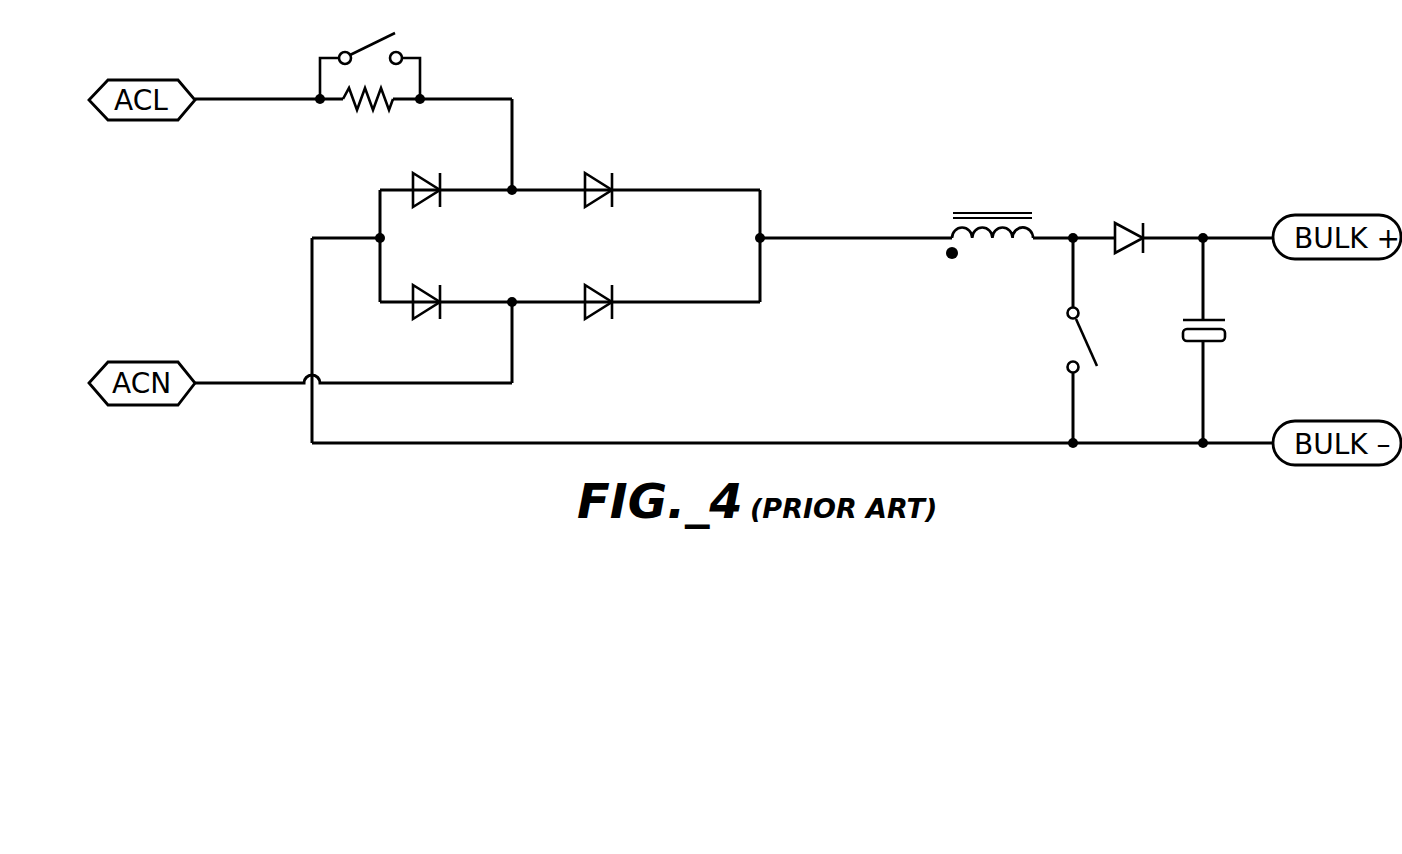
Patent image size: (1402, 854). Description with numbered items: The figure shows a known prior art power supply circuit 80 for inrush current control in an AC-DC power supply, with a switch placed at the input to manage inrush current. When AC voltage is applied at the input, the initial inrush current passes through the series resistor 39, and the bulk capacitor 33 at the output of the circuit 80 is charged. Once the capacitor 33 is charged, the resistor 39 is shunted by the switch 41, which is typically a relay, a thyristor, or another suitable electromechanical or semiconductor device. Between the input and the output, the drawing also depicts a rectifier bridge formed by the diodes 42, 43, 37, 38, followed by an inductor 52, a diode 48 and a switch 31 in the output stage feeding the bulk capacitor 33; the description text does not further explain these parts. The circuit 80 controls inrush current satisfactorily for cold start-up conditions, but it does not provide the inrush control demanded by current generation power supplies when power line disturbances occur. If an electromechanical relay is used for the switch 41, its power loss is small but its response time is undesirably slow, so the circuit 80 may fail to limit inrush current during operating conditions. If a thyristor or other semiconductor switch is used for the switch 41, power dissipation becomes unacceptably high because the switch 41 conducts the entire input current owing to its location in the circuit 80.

The power supply circuit 80 is at (1222, 172).
The switch 41 is at (368, 48).
The series resistor 39 is at (372, 105).
The bridge rectifier diode 42 is at (425, 173).
The bridge rectifier diode 43 is at (425, 285).
The bridge rectifier diode 37 is at (598, 173).
The bridge rectifier diode 38 is at (598, 285).
The boost inductor 52 is at (1009, 232).
The boost diode 48 is at (1128, 223).
The boost switch 31 is at (1088, 340).
The bulk capacitor 33 is at (1215, 345).